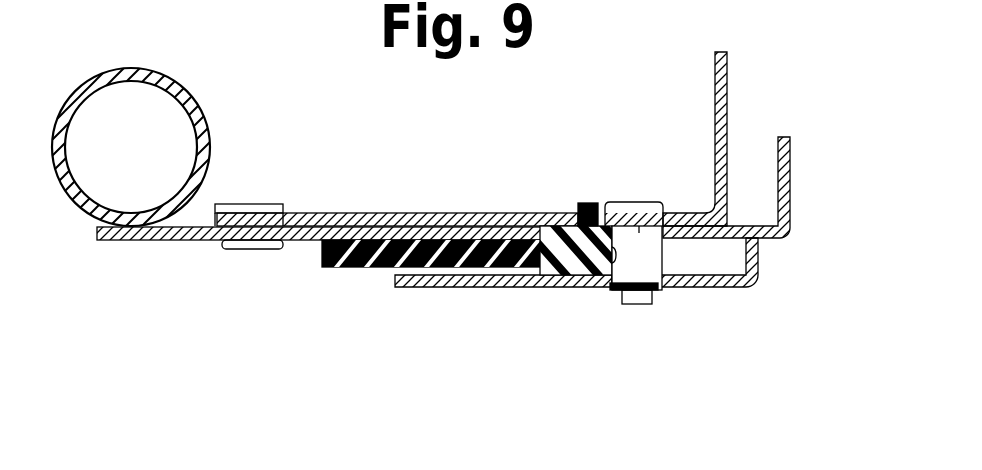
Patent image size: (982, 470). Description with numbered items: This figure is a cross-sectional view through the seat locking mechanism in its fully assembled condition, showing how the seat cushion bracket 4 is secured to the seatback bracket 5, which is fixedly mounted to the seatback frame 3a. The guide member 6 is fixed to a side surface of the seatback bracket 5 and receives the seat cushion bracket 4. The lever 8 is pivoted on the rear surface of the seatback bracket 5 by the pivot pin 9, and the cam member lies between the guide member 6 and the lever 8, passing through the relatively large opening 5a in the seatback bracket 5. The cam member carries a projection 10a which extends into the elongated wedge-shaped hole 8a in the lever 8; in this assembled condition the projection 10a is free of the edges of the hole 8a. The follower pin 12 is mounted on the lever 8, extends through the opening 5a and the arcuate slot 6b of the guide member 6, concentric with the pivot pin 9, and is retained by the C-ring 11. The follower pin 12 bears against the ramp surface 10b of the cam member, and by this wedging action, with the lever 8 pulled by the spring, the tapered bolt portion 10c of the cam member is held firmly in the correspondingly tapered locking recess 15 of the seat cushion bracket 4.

The seatback frame 3a is at (197, 118).
The seat cushion bracket 4 is at (367, 257).
The seatback bracket 5 is at (303, 238).
The opening 5a is at (530, 213).
The guide member 6 is at (568, 278).
The arcuate slot 6b is at (636, 297).
The lever 8 is at (382, 213).
The wedge-shaped hole 8a is at (583, 206).
The pivot pin 9 is at (248, 205).
The projection 10a is at (593, 207).
The ramp surface 10b is at (600, 278).
The tapered bolt portion 10c is at (543, 266).
The C-ring 11 is at (650, 288).
The follower pin 12 is at (641, 212).
The locking recess 15 is at (523, 287).